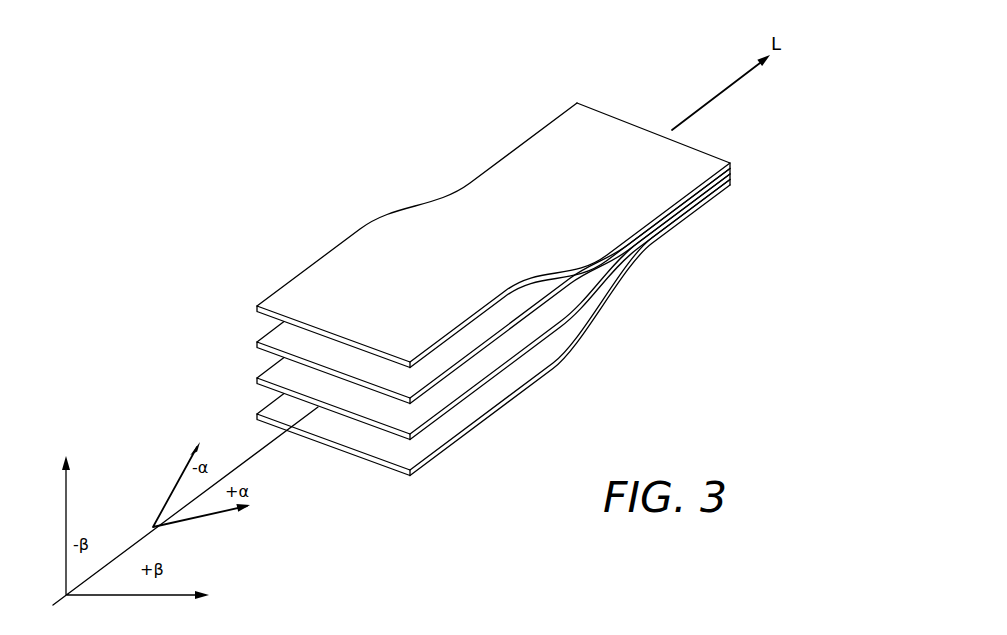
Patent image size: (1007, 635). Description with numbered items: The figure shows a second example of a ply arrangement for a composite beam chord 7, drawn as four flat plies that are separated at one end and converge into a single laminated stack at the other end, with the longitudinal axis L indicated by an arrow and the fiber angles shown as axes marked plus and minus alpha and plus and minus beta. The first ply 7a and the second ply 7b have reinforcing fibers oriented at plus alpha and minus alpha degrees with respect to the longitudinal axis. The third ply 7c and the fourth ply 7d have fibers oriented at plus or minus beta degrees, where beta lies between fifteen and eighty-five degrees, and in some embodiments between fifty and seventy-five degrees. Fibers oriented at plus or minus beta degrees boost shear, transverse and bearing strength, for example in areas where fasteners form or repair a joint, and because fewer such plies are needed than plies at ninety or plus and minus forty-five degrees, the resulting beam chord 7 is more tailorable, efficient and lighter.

The composite beam chord 7 is at (452, 76).
The first ply 7a is at (257, 414).
The second ply 7b is at (257, 378).
The third ply 7c is at (257, 342).
The fourth ply 7d is at (257, 306).